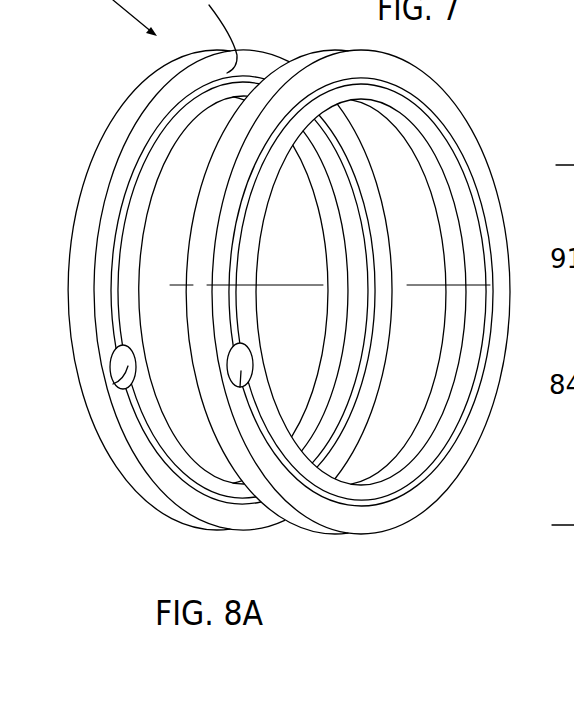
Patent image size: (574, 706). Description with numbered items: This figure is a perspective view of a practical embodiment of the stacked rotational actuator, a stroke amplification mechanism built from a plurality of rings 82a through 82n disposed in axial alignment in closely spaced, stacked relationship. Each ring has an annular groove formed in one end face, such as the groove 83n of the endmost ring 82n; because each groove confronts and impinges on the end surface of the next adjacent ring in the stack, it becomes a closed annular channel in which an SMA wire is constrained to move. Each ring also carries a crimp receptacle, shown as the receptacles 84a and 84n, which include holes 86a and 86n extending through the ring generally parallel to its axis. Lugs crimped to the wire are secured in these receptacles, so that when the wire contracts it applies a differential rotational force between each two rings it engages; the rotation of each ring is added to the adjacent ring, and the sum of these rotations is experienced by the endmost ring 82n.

The ring 82a is at (200, 266).
The ring 82n is at (355, 333).
The annular groove 83n is at (434, 468).
The crimp receptacle 84a is at (103, 341).
The crimp receptacle 84n is at (268, 359).
The hole 86a is at (113, 385).
The hole 86n is at (243, 389).